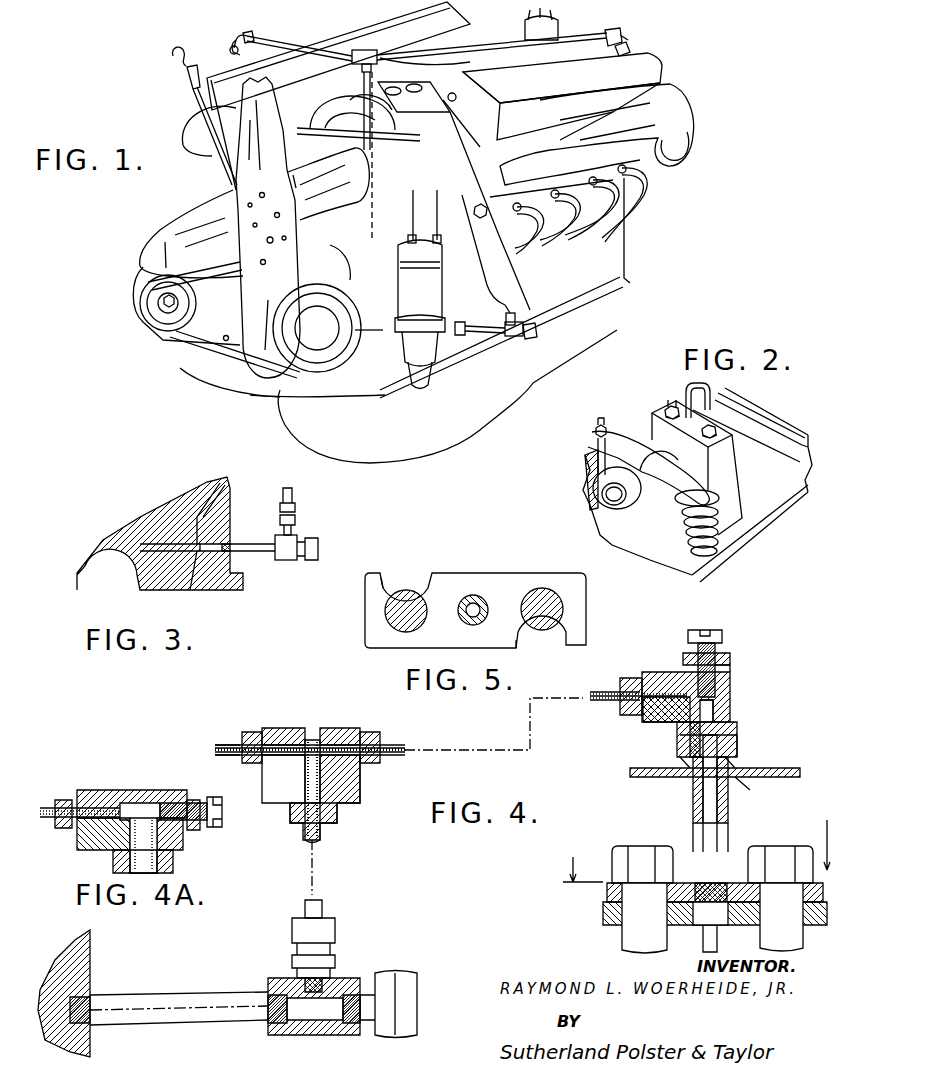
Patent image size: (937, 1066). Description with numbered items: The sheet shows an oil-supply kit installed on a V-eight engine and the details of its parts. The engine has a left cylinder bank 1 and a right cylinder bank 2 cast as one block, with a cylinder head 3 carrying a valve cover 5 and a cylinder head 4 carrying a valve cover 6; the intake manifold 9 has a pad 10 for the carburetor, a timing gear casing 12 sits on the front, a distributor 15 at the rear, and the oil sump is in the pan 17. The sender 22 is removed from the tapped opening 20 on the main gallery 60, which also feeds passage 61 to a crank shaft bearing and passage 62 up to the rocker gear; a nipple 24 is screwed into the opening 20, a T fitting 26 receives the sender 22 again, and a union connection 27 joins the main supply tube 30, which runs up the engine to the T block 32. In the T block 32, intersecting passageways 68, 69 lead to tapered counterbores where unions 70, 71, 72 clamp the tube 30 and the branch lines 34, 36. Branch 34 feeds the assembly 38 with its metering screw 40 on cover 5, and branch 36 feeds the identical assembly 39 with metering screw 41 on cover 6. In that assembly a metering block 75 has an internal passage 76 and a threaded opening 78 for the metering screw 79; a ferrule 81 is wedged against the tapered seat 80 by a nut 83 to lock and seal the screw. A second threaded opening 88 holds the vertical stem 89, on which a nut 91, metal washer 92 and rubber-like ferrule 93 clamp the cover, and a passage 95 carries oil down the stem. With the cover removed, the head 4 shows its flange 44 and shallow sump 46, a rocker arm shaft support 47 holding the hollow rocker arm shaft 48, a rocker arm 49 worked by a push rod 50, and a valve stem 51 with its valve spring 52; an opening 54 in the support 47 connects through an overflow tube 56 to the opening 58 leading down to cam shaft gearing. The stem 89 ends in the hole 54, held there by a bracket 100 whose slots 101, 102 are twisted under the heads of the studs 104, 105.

In FIG. 1, the left cylinder bank 1 is at (210, 172).
In FIG. 1, the right cylinder bank 2 is at (410, 212).
In FIG. 1, the cylinder head 3 is at (234, 136).
In FIG. 1, the cylinder head 4 is at (455, 169).
In FIG. 2, the cylinder head 4 is at (778, 522).
In FIG. 1, the valve cover 5 is at (330, 38).
In FIG. 4, the valve cover 5 is at (695, 845).
In FIG. 1, the valve cover 6 is at (563, 79).
In FIG. 4, the valve cover 6 is at (632, 768).
In FIG. 1, the intake manifold 9 is at (342, 110).
In FIG. 1, the pad 10 is at (458, 90).
In FIG. 1, the timing gear casing 12 is at (372, 305).
In FIG. 1, the distributor 15 is at (558, 25).
In FIG. 1, the pan 17 is at (325, 418).
In FIG. 1, the opening 20 is at (490, 318).
In FIG. 3, the opening 20 is at (232, 542).
In FIG. 4, the opening 20 is at (80, 995).
In FIG. 1, the sender 22 is at (530, 340).
In FIG. 3, the sender 22 is at (312, 538).
In FIG. 4, the sender 22 is at (402, 973).
In FIG. 1, the nipple 24 is at (480, 338).
In FIG. 3, the nipple 24 is at (258, 555).
In FIG. 4, the nipple 24 is at (198, 992).
In FIG. 1, the T fitting 26 is at (510, 338).
In FIG. 3, the T fitting 26 is at (286, 562).
In FIG. 4, the T fitting 26 is at (308, 1035).
In FIG. 1, the union connection 27 is at (515, 313).
In FIG. 3, the union connection 27 is at (292, 508).
In FIG. 4, the union connection 27 is at (336, 925).
In FIG. 1, the main supply tube 30 is at (510, 278).
In FIG. 4, the main supply tube 30 is at (312, 898).
In FIG. 1, the T block 32 is at (370, 50).
In FIG. 4, the T block 32 is at (362, 796).
In FIG. 1, the branch line 34 is at (312, 52).
In FIG. 4, the branch line 34 is at (218, 744).
In FIG. 1, the branch line 36 is at (490, 58).
In FIG. 4, the branch line 36 is at (395, 742).
In FIG. 4A, the branch line 36 is at (47, 806).
In FIG. 1, the assembly 38 is at (222, 42).
In FIG. 1, the assembly 39 is at (633, 30).
In FIG. 4, the assembly 39 is at (746, 666).
In FIG. 1, the metering screw 40 is at (229, 50).
In FIG. 1, the metering screw 41 is at (631, 50).
In FIG. 2, the flange 44 is at (782, 425).
In FIG. 2, the sump 46 is at (745, 428).
In FIG. 2, the rocker arm shaft support 47 is at (732, 464).
In FIG. 4, the rocker arm shaft support 47 is at (605, 925).
In FIG. 2, the hollow rocker arm shaft 48 is at (630, 525).
In FIG. 2, the rocker arm 49 is at (680, 515).
In FIG. 2, the push rod 50 is at (598, 480).
In FIG. 2, the valve stem 51 is at (728, 503).
In FIG. 2, the valve spring 52 is at (715, 545).
In FIG. 2, the opening 54 is at (652, 424).
In FIG. 4, the opening 54 is at (680, 926).
In FIG. 2, the overflow tube 56 is at (686, 391).
In FIG. 2, the opening 58 is at (710, 395).
In FIG. 3, the main gallery 60 is at (192, 592).
In FIG. 3, the passage 61 is at (150, 518).
In FIG. 3, the passage 62 is at (208, 482).
In FIG. 4, the passageway 68 is at (311, 738).
In FIG. 4, the passageway 69 is at (332, 727).
In FIG. 4, the union 70 is at (338, 818).
In FIG. 4, the union 71 is at (252, 730).
In FIG. 4, the union 72 is at (366, 730).
In FIG. 4, the metering block 75 is at (732, 720).
In FIG. 4A, the metering block 75 is at (135, 790).
In FIG. 4, the internal passage 76 is at (690, 690).
In FIG. 4A, the internal passage 76 is at (118, 795).
In FIG. 4, the threaded opening 78 is at (732, 686).
In FIG. 4A, the threaded opening 78 is at (160, 790).
In FIG. 4, the metering screw 79 is at (722, 633).
In FIG. 4A, the metering screw 79 is at (214, 828).
In FIG. 4, the tapered seat 80 is at (732, 668).
In FIG. 4, the ferrule 81 is at (716, 670).
In FIG. 4A, the ferrule 81 is at (183, 800).
In FIG. 4, the nut 83 is at (690, 655).
In FIG. 4A, the nut 83 is at (195, 830).
In FIG. 4, the threaded opening 88 is at (678, 728).
In FIG. 5, the vertical stem 89 is at (475, 595).
In FIG. 4, the vertical stem 89 is at (686, 740).
In FIG. 4A, the vertical stem 89 is at (168, 855).
In FIG. 4, the nut 91 is at (740, 746).
In FIG. 4A, the nut 91 is at (113, 860).
In FIG. 4, the metal washer 92 is at (738, 762).
In FIG. 4, the ferrule 93 is at (750, 782).
In FIG. 4, the passage 95 is at (720, 818).
In FIG. 5, the bracket 100 is at (520, 557).
In FIG. 4, the bracket 100 is at (610, 880).
In FIG. 5, the slot 101 is at (428, 580).
In FIG. 5, the slot 102 is at (520, 640).
In FIG. 5, the stud 104 is at (395, 610).
In FIG. 4, the stud 104 is at (640, 850).
In FIG. 5, the stud 105 is at (555, 604).
In FIG. 4, the stud 105 is at (795, 850).